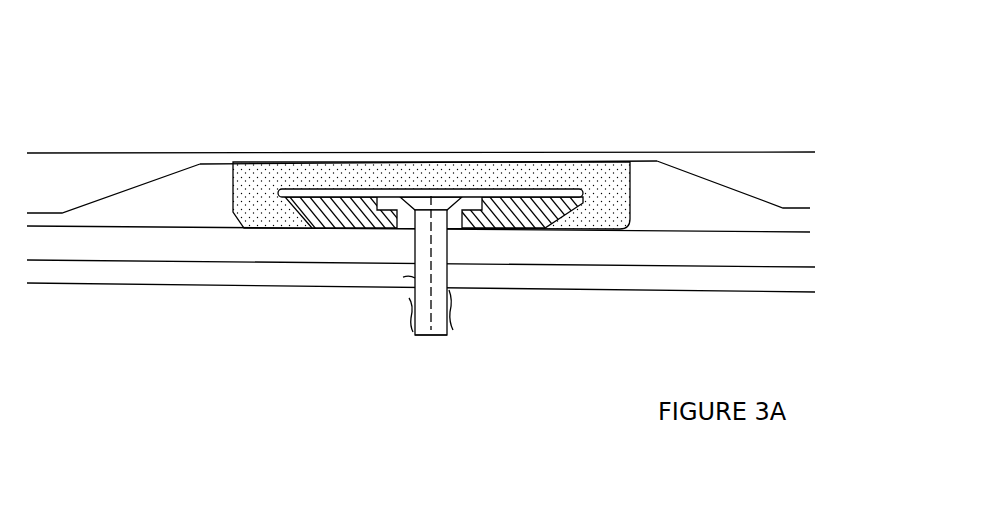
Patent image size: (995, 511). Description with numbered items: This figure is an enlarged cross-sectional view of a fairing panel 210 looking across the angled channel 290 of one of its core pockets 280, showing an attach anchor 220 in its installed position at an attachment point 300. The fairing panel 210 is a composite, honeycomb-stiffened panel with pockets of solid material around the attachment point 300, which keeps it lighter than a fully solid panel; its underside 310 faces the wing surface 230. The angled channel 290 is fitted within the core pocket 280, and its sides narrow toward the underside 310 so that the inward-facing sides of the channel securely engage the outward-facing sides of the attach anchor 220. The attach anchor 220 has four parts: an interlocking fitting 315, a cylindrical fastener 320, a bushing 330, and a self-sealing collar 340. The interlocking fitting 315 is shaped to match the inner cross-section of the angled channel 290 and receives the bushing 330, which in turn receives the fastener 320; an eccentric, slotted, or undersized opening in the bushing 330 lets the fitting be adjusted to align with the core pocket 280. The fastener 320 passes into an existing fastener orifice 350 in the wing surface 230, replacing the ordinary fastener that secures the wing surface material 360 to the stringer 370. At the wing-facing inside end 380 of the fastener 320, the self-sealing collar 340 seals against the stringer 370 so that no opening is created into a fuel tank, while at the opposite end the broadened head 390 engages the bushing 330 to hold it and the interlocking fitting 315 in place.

The attachment point 300 is at (92, 146).
The fairing panel 210 is at (742, 174).
The underside 310 is at (167, 236).
The core pocket 280 is at (660, 203).
The wing surface 230 is at (690, 237).
The wing surface material 360 is at (780, 251).
The stringer 370 is at (780, 286).
The angled channel 290 is at (260, 185).
The bushing 330 is at (485, 189).
The interlocking fitting 315 is at (513, 229).
The broadened head 390 is at (448, 187).
The attach anchor 220 is at (408, 245).
The fastener orifice 350 is at (412, 278).
The self-sealing collar 340 is at (411, 290).
The cylindrical fastener 320 is at (448, 335).
The inside end 380 is at (421, 340).